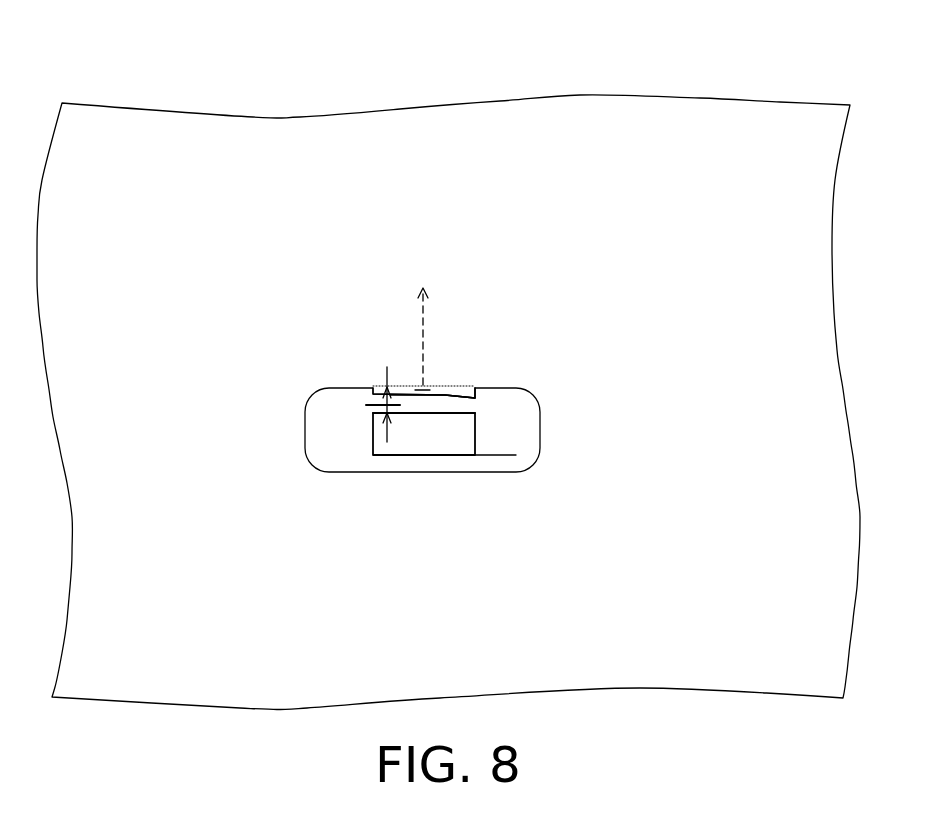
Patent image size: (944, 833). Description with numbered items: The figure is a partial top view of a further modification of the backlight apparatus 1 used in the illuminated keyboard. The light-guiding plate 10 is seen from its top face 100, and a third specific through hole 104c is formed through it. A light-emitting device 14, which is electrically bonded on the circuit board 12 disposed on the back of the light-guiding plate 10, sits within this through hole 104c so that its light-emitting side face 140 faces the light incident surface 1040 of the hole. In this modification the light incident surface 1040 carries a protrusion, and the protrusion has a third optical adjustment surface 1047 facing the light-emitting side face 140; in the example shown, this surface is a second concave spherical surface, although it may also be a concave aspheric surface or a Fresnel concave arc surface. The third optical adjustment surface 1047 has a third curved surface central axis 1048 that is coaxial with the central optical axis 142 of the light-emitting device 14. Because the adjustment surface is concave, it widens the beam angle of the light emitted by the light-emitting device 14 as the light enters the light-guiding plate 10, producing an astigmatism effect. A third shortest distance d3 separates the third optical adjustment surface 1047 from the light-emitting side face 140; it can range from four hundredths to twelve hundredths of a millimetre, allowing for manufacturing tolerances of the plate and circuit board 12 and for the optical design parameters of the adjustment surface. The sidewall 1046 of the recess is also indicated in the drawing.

The backlight apparatus 1 is at (448, 87).
The light-guiding plate 10 is at (695, 142).
The top face 100 is at (770, 556).
The third specific through hole 104c is at (518, 415).
The light incident surface 1040 is at (348, 388).
The recess sidewall 1046 is at (476, 390).
The third optical adjustment surface 1047 is at (447, 397).
The third curved surface central axis 1048 is at (420, 312).
The central optical axis 142 is at (425, 385).
The light-emitting device 14 is at (433, 440).
The light-emitting side face 140 is at (407, 415).
The circuit board 12 is at (498, 448).
The third shortest distance d3 is at (400, 404).